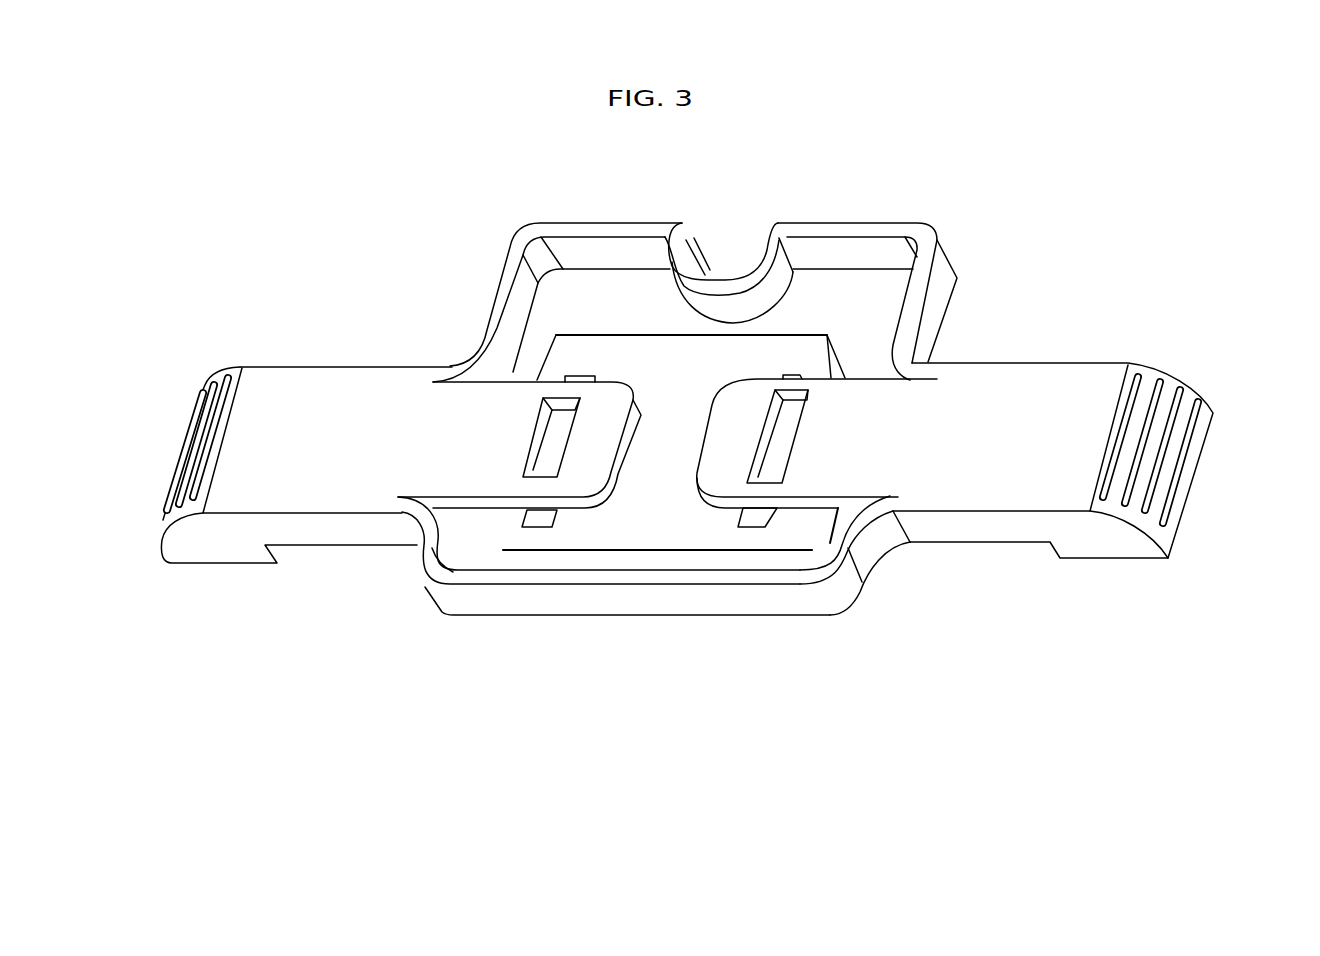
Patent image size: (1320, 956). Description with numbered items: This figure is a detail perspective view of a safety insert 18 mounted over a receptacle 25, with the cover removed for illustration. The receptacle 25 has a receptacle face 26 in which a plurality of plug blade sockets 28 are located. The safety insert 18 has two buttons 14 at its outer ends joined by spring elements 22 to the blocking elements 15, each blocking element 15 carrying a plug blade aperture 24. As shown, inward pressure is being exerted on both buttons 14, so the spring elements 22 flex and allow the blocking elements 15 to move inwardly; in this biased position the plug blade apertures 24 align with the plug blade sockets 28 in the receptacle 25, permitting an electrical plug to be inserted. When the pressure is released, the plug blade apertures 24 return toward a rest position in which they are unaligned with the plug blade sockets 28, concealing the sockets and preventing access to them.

The safety insert 18 is at (677, 404).
The spring elements 22 is at (849, 226).
The buttons 14 is at (170, 526).
The blocking elements 15 is at (580, 482).
The plug blade apertures 24 is at (560, 418).
The receptacle 25 is at (612, 348).
The receptacle face 26 is at (697, 398).
The plug blade sockets 28 is at (537, 520).